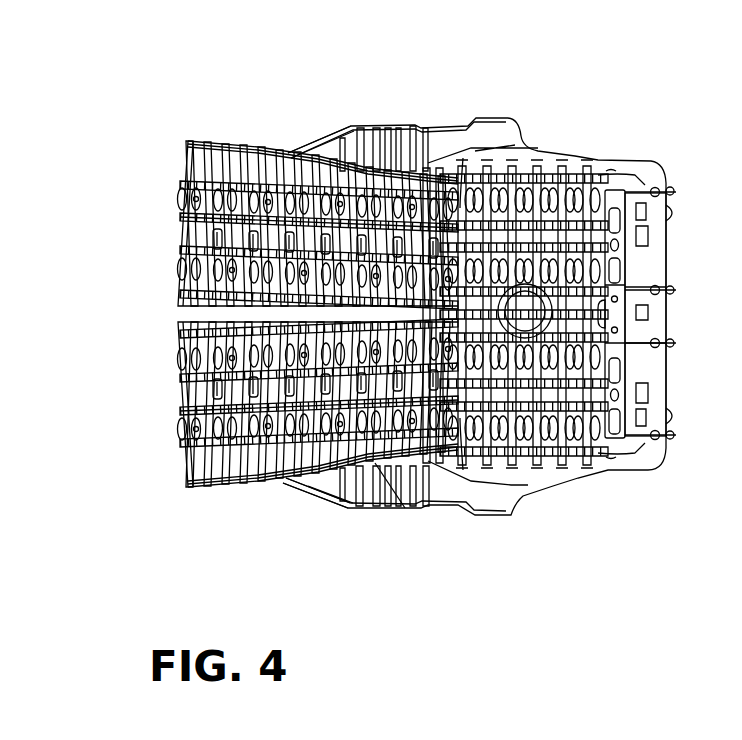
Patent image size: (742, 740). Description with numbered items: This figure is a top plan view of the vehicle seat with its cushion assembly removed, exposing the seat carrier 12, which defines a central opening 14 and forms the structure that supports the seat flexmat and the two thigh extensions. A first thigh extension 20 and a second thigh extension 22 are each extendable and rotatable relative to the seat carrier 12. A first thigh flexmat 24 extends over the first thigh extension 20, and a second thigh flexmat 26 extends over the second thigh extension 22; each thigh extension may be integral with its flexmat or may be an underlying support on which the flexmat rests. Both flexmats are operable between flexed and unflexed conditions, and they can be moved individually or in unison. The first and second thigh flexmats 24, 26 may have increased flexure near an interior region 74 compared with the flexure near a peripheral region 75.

The seat carrier 12 is at (477, 132).
The central opening 14 is at (572, 190).
The first thigh extension 20 is at (252, 475).
The second thigh extension 22 is at (256, 135).
The first thigh flexmat 24 is at (315, 465).
The second thigh flexmat 26 is at (282, 145).
The interior region 74 is at (250, 223).
The peripheral region 75 is at (347, 165).